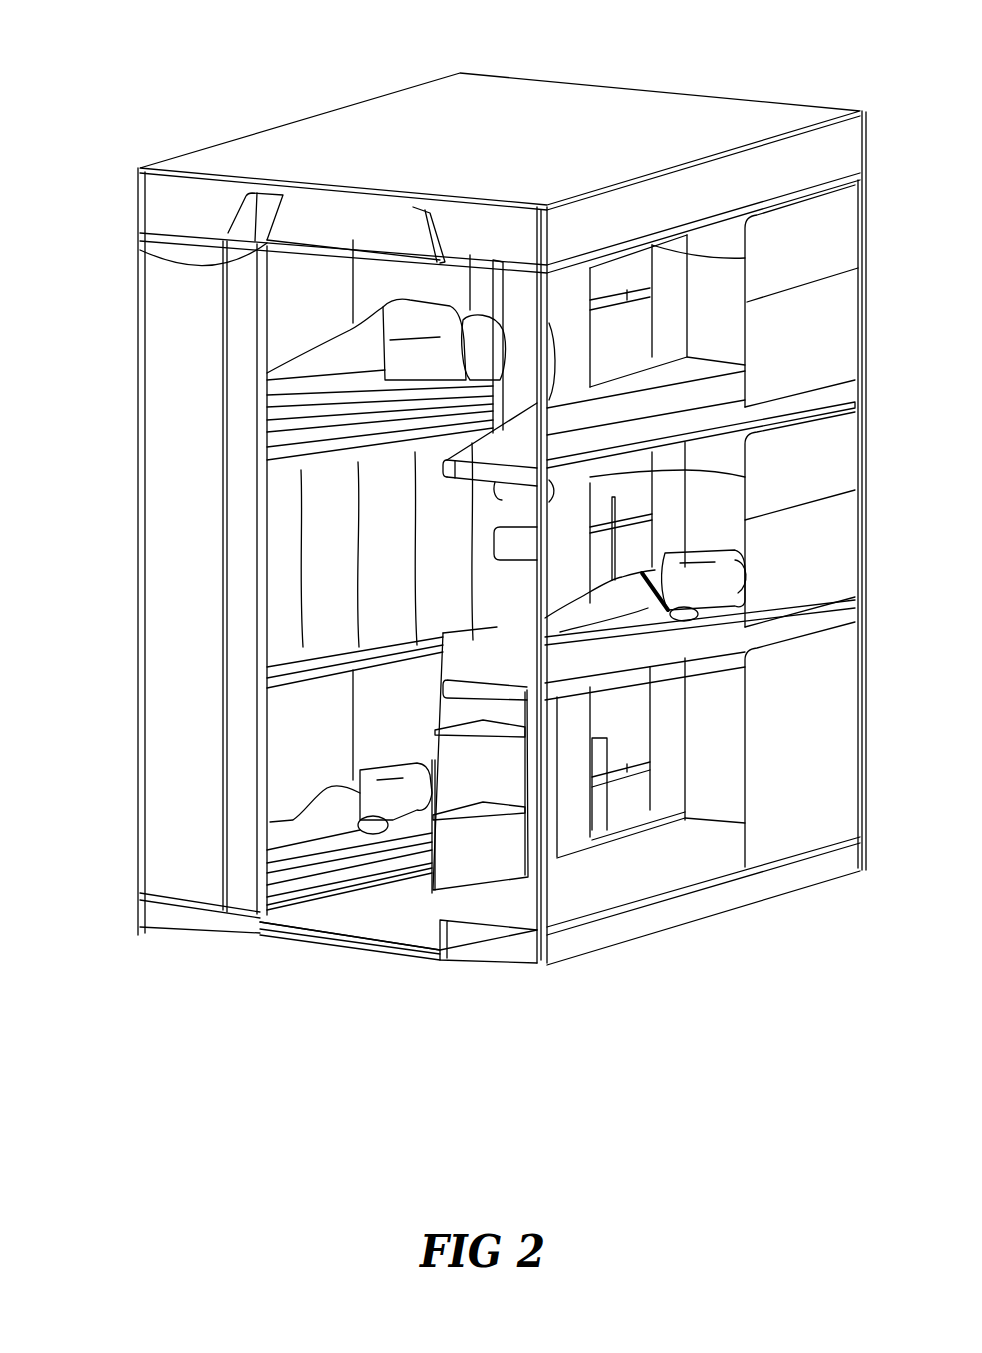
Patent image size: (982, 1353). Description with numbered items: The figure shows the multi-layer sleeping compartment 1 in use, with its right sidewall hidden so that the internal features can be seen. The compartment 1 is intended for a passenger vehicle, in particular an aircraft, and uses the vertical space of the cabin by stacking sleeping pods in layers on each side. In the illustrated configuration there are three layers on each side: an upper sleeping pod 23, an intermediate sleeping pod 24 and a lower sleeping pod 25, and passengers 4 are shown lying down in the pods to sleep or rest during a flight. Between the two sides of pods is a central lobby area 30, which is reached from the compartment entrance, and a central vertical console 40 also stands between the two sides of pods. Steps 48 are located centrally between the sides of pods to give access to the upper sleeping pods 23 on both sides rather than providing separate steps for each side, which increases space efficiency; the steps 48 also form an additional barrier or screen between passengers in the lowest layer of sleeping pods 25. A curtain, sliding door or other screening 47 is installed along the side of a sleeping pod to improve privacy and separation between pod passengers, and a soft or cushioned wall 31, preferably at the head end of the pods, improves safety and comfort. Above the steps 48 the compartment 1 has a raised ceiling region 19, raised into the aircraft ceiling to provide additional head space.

The multi-layer sleeping compartment 1 is at (789, 75).
The raised ceiling region 19 is at (297, 213).
The upper sleeping pod 23 is at (303, 326).
The curtain, sliding door or other screening 47 is at (315, 523).
The intermediate sleeping pod 24 is at (283, 623).
The lower sleeping pod 25 is at (285, 801).
The passenger 4 is at (290, 853).
The central lobby area 30 is at (428, 923).
The steps 48 is at (497, 825).
The central vertical console 40 is at (575, 495).
The soft or cushioned wall 31 is at (832, 352).